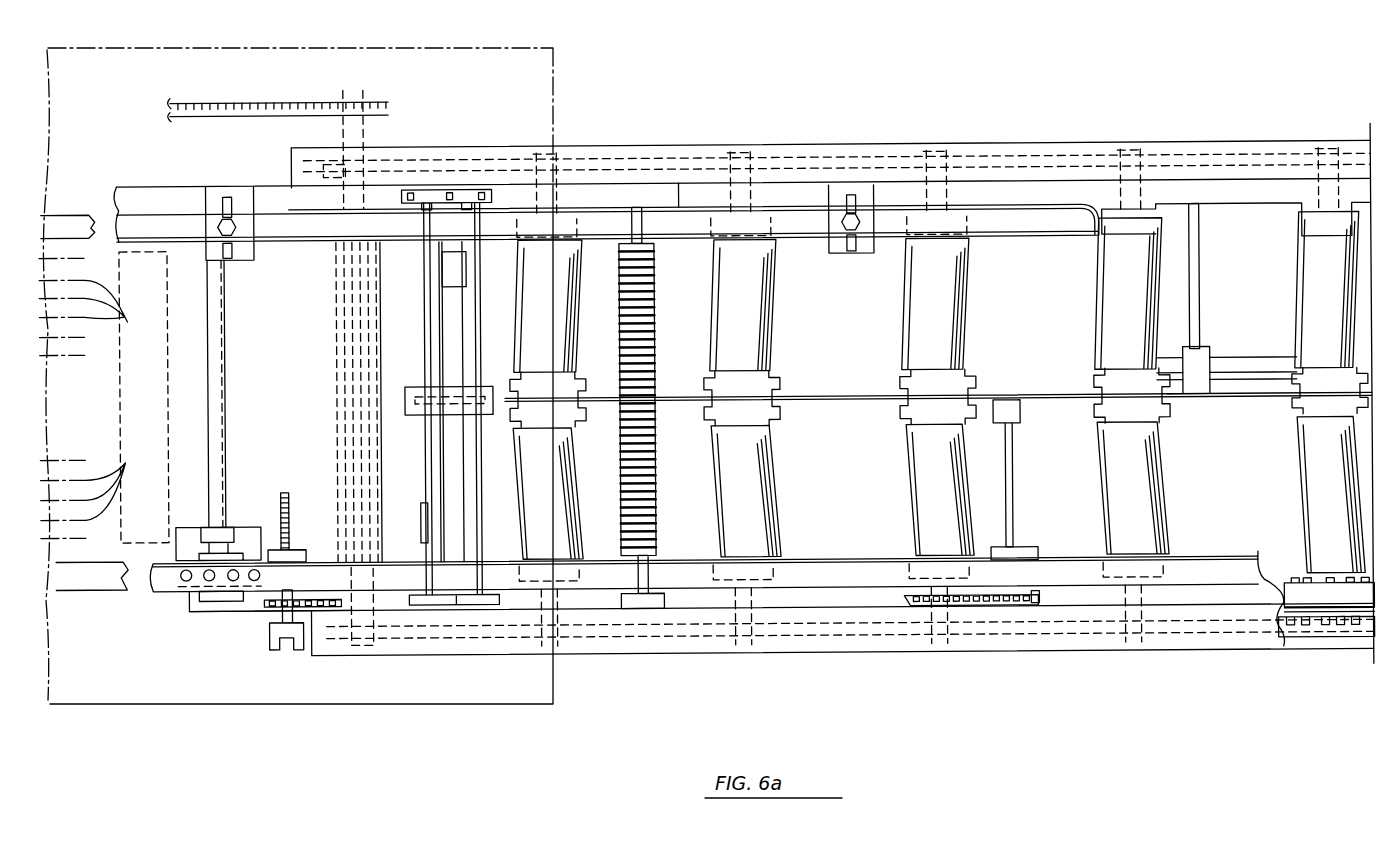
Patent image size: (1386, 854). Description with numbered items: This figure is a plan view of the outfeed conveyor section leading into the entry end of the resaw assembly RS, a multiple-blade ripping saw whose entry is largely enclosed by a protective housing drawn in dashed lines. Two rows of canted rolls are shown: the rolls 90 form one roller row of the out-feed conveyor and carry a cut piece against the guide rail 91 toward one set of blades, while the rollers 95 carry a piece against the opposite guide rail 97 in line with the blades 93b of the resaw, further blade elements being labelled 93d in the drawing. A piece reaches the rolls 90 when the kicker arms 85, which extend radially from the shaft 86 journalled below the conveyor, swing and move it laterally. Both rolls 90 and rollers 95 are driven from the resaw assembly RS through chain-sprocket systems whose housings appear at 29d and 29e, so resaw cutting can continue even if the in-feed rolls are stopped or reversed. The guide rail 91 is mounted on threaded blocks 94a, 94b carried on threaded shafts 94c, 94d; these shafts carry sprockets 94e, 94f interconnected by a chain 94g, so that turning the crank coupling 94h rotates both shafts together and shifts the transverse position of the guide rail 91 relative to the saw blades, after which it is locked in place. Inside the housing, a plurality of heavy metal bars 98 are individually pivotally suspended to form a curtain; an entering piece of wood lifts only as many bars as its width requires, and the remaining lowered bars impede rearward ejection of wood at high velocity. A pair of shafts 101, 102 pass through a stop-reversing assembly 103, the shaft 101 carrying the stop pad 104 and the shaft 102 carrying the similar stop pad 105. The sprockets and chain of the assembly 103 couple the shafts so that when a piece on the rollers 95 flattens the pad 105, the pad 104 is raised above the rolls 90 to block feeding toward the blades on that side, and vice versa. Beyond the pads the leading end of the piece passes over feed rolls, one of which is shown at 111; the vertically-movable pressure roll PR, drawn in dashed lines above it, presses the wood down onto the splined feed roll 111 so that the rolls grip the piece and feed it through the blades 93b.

The resaw assembly RS is at (553, 88).
The pressure roll PR is at (120, 400).
The chain-sprocket housing 29d is at (915, 145).
The chain-sprocket housing 29e is at (790, 652).
The kicker arm 85 is at (1200, 270).
The shaft 86 is at (1247, 383).
The roll 90 is at (575, 472).
The guide rail 91 is at (872, 560).
The saw blade 93b is at (104, 307).
The sensor leads 93d is at (105, 494).
The threaded block 94a is at (300, 487).
The threaded block 94b is at (1030, 549).
The threaded shaft 94c is at (245, 480).
The threaded shaft 94d is at (1014, 474).
The sprocket 94e is at (265, 598).
The sprocket 94f is at (1040, 596).
The chain 94g is at (995, 607).
The crank coupling 94h is at (272, 628).
The roller 95 is at (565, 338).
The guide rail 97 is at (306, 240).
The heavy metal bar 98 is at (657, 358).
The shaft 101 is at (428, 290).
The shaft 102 is at (478, 510).
The stop-reversing assembly 103 is at (414, 385).
The stop pad 104 is at (423, 503).
The stop pad 105 is at (462, 273).
The feed roll 111 is at (372, 400).